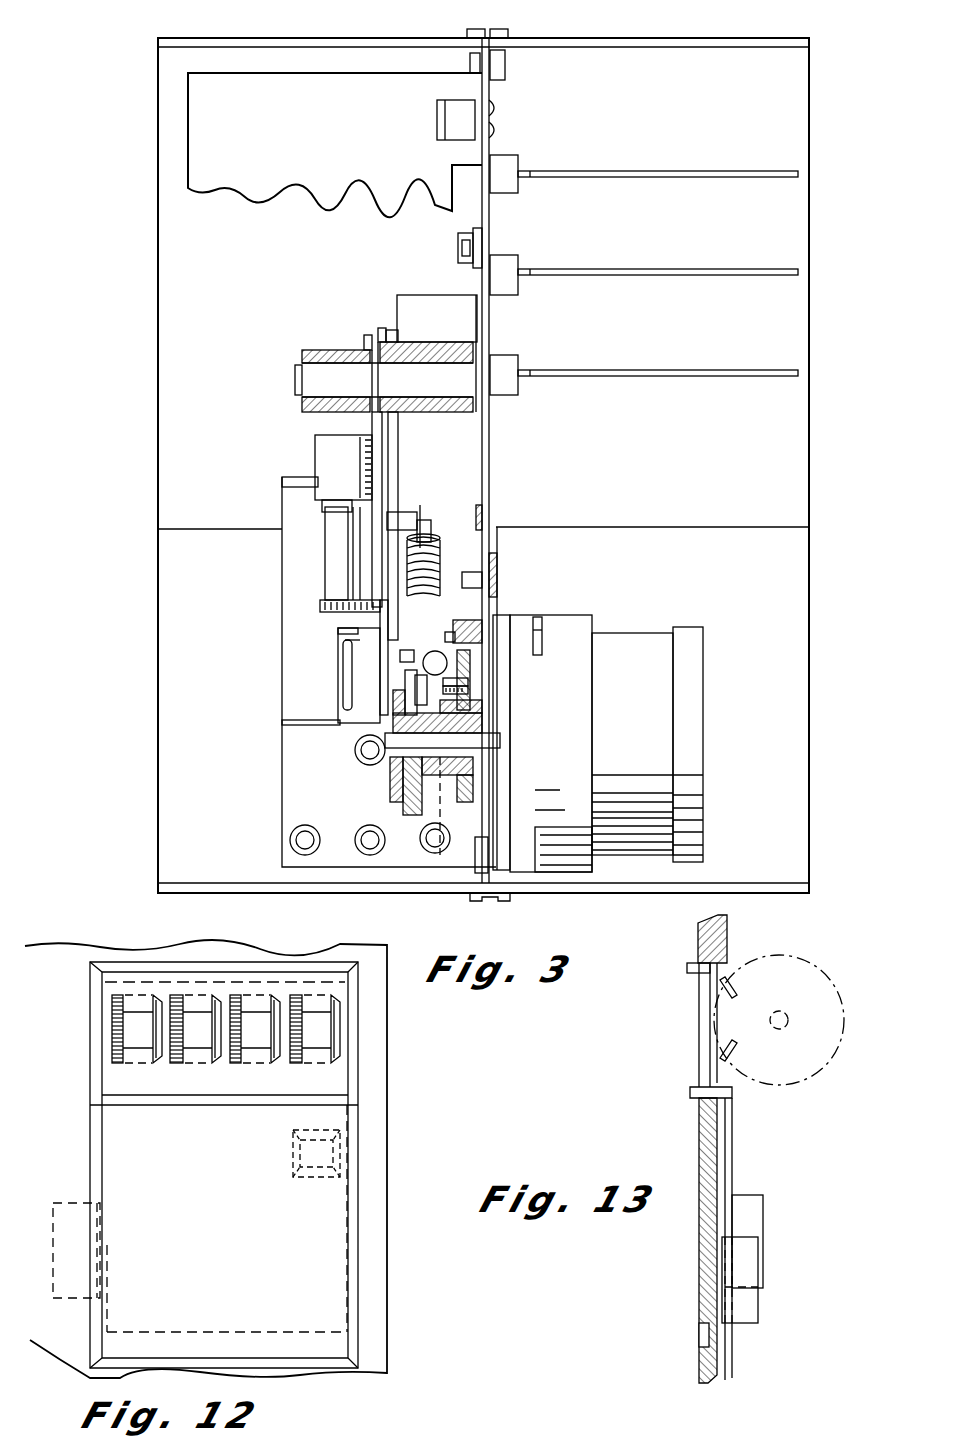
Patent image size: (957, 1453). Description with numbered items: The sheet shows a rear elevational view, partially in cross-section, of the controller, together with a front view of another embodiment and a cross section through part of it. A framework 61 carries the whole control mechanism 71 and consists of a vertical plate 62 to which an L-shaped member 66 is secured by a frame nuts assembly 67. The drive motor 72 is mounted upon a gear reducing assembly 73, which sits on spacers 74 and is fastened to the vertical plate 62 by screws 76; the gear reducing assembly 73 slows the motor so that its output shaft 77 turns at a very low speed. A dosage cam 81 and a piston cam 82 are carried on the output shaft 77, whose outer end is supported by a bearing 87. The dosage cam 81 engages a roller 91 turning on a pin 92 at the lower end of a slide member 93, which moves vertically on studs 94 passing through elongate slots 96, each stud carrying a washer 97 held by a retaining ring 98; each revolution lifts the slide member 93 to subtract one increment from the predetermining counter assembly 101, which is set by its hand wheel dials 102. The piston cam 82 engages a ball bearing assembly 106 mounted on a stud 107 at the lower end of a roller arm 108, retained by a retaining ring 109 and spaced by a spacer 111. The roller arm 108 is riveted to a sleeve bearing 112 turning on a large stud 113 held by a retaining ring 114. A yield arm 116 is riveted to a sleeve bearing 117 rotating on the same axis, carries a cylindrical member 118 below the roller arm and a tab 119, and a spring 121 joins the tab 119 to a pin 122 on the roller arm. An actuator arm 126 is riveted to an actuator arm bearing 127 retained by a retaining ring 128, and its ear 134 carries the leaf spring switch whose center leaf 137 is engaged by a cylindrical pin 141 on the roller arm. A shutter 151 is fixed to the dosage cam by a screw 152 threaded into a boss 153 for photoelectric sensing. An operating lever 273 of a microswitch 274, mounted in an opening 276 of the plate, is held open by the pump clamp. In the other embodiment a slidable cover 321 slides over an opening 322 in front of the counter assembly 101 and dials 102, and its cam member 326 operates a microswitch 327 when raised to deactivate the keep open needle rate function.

In FIG. 3, the framework 61 is at (445, 70).
In FIG. 3, the vertical plate 62 is at (492, 440).
In FIG. 3, the L-shaped member 66 is at (290, 180).
In FIG. 3, the frame nuts assembly 67 is at (495, 115).
In FIG. 3, the control mechanism 71 is at (300, 690).
In FIG. 3, the drive motor 72 is at (655, 630).
In FIG. 3, the gear reducing assembly 73 is at (578, 632).
In FIG. 3, the spacers 74 is at (500, 625).
In FIG. 3, the screws 76 is at (542, 640).
In FIG. 3, the output shaft 77 is at (485, 748).
In FIG. 3, the dosage cam 81 is at (475, 803).
In FIG. 3, the piston cam 82 is at (420, 812).
In FIG. 3, the bearing 87 is at (390, 775).
In FIG. 3, the roller 91 is at (492, 618).
In FIG. 3, the pin 92 is at (453, 625).
In FIG. 3, the slide member 93 is at (472, 262).
In FIG. 3, the studs 94 is at (458, 243).
In FIG. 3, the elongate slots 96 is at (484, 520).
In FIG. 3, the washer 97 is at (470, 580).
In FIG. 3, the retaining ring 98 is at (462, 578).
In FIG. 3, the ball bearing assembly 106 is at (430, 660).
In FIG. 3, the stud 107 is at (375, 680).
In FIG. 3, the roller arm 108 is at (372, 425).
In FIG. 3, the retaining ring 109 is at (395, 700).
In FIG. 3, the spacer 111 is at (380, 710).
In FIG. 3, the sleeve bearing 112 is at (400, 335).
In FIG. 3, the large stud 113 is at (443, 345).
In FIG. 3, the retaining ring 114 is at (368, 338).
In FIG. 3, the yield arm 116 is at (398, 450).
In FIG. 3, the sleeve bearing 117 is at (478, 345).
In FIG. 3, the cylindrical member 118 is at (335, 560).
In FIG. 3, the tab 119 is at (387, 650).
In FIG. 3, the spring 121 is at (345, 520).
In FIG. 3, the pin 122 is at (423, 530).
In FIG. 3, the actuator arm 126 is at (380, 545).
In FIG. 3, the actuator arm bearing 127 is at (320, 350).
In FIG. 3, the retaining ring 128 is at (302, 354).
In FIG. 3, the ear 134 is at (330, 455).
In FIG. 3, the center leaf 137 is at (325, 527).
In FIG. 3, the cylindrical pin 141 is at (325, 606).
In FIG. 3, the shutter 151 is at (472, 680).
In FIG. 3, the screw 152 is at (470, 693).
In FIG. 3, the boss 153 is at (478, 707).
In FIG. 3, the operating lever 273 is at (340, 732).
In FIG. 3, the microswitch 274 is at (345, 632).
In FIG. 3, the opening 276 is at (348, 642).
In FIG. 12, the predetermining counter assembly 101 is at (272, 1070).
In FIG. 13, the predetermining counter assembly 101 is at (692, 1045).
In FIG. 12, the hand wheel dials 102 is at (118, 1030).
In FIG. 13, the hand wheel dials 102 is at (840, 985).
In FIG. 13, the slidable cover 321 is at (712, 1157).
In FIG. 13, the opening 322 is at (705, 977).
In FIG. 13, the cam member 326 is at (755, 1312).
In FIG. 12, the microswitch 327 is at (75, 1203).
In FIG. 13, the microswitch 327 is at (764, 1213).